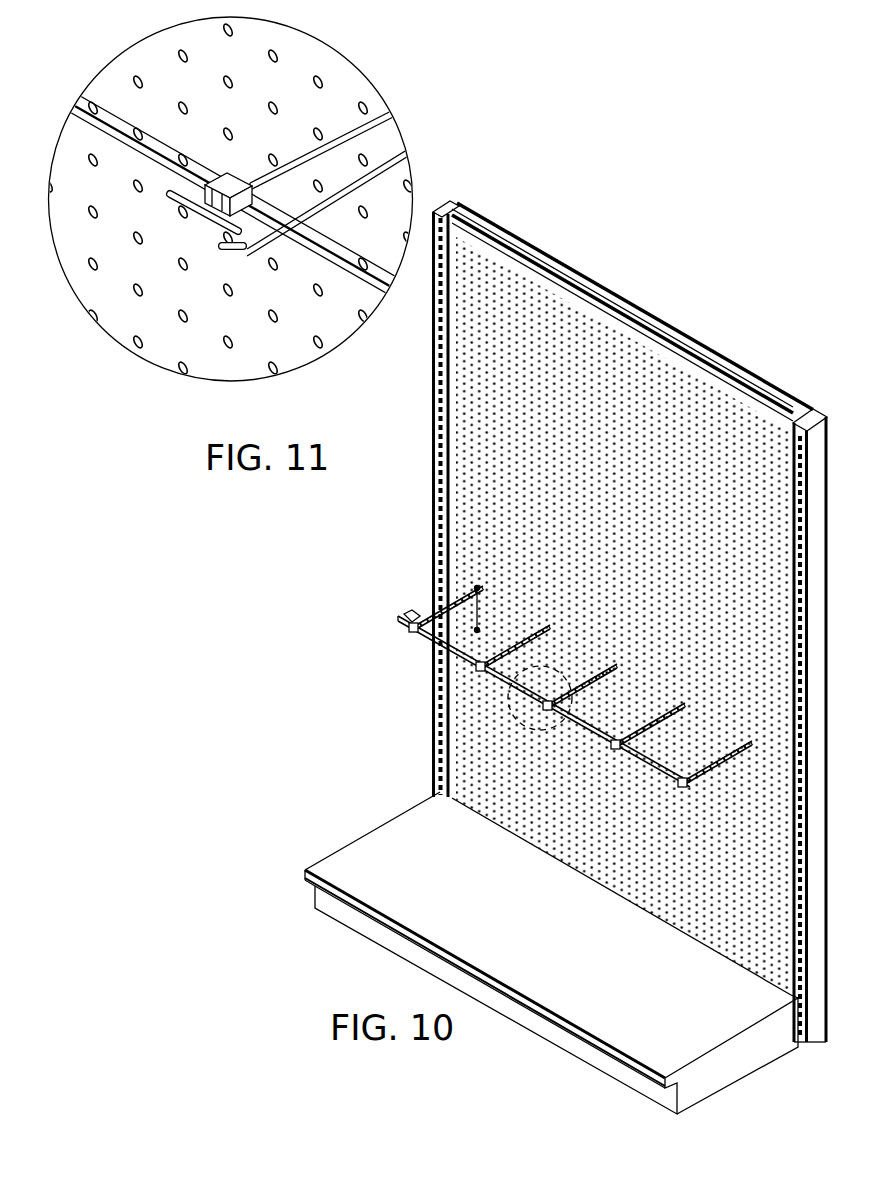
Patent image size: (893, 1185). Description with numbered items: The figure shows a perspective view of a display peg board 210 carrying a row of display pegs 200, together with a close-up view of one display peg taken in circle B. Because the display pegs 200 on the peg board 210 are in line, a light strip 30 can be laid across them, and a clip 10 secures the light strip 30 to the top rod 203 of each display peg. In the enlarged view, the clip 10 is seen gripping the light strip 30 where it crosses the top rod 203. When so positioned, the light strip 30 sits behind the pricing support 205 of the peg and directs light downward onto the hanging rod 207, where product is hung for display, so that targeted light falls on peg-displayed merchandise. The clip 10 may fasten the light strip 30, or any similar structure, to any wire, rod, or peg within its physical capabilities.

In FIG. 11, the clip 10 is at (245, 178).
In FIG. 11, the light strip 30 is at (378, 292).
In FIG. 10, the display pegs 200 is at (433, 615).
In FIG. 11, the top rod 203 is at (382, 113).
In FIG. 11, the pricing support 205 is at (178, 203).
In FIG. 11, the hanging rod 207 is at (233, 250).
In FIG. 10, the peg board 210 is at (477, 770).
In FIG. 10, the circle B is at (515, 708).